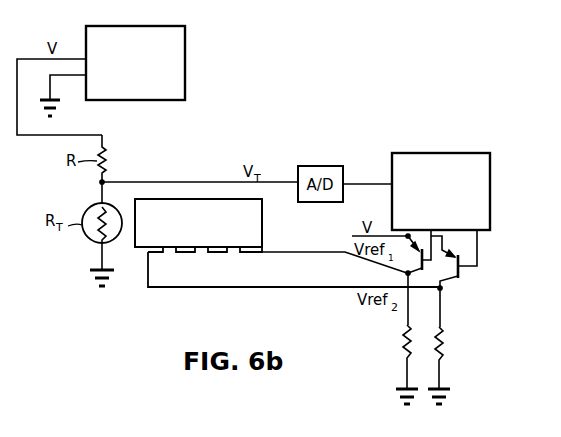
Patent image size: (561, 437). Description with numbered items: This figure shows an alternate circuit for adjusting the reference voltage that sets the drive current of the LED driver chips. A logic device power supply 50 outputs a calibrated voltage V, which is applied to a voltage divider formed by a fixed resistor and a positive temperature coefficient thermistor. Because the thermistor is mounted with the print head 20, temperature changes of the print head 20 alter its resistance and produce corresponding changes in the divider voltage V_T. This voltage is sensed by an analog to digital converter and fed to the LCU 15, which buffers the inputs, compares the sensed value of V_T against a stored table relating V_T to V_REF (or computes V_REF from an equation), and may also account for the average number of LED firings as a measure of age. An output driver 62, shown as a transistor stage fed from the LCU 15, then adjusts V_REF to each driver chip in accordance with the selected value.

The logic device power supply 50 is at (175, 25).
The LCU 15 is at (413, 152).
The print head 20 is at (189, 225).
The output driver 62 is at (456, 284).